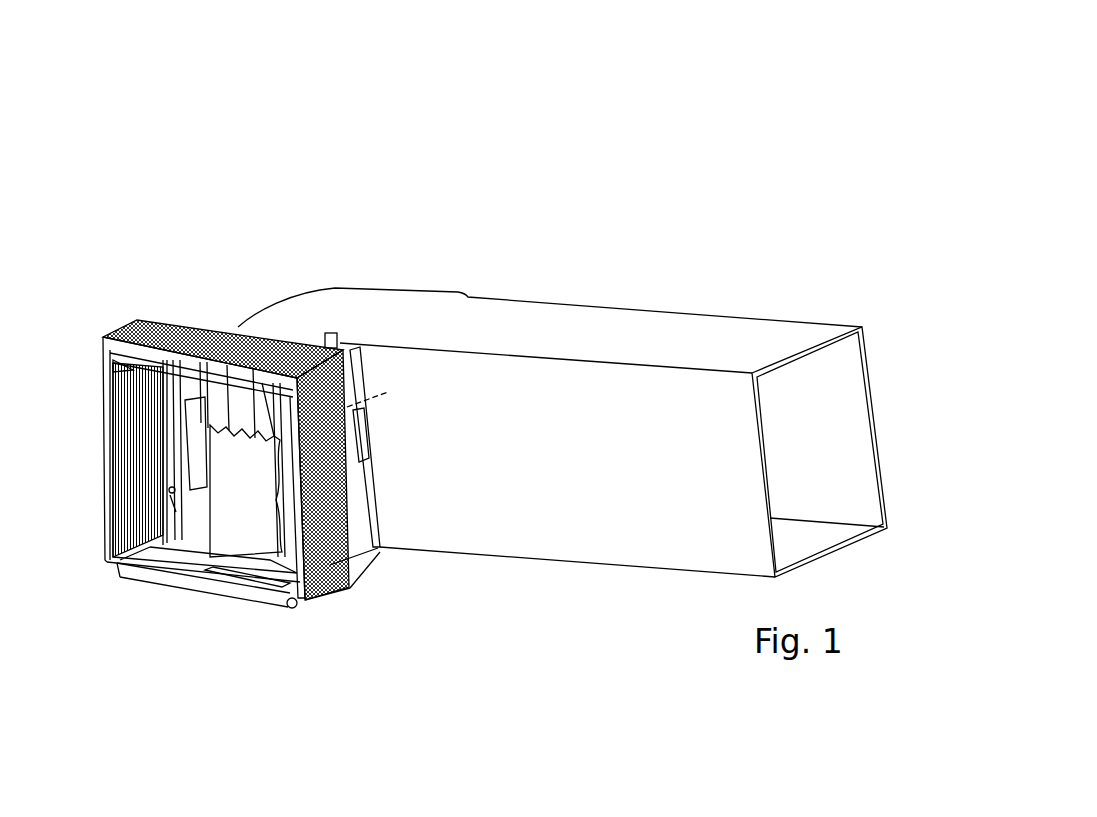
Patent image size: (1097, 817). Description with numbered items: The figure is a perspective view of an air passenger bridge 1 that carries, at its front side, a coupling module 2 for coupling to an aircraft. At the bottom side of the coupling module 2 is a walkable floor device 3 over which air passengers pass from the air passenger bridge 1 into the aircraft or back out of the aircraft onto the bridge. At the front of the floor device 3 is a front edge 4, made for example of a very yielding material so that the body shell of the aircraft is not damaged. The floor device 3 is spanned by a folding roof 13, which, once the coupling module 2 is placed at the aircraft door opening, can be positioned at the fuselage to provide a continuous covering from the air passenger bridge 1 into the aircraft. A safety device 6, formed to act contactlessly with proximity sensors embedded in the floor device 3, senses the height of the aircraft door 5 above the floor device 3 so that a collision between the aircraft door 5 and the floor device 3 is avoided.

The air passenger bridge 1 is at (683, 198).
The coupling module 2 is at (195, 325).
The floor device 3 is at (148, 551).
The front edge 4 is at (144, 577).
The aircraft door 5 is at (270, 548).
The safety device 6 is at (245, 578).
The folding roof 13 is at (103, 432).